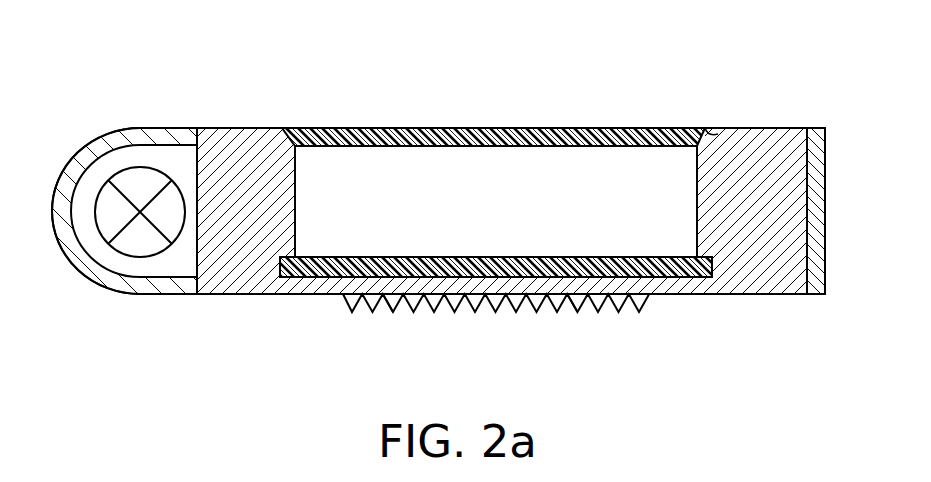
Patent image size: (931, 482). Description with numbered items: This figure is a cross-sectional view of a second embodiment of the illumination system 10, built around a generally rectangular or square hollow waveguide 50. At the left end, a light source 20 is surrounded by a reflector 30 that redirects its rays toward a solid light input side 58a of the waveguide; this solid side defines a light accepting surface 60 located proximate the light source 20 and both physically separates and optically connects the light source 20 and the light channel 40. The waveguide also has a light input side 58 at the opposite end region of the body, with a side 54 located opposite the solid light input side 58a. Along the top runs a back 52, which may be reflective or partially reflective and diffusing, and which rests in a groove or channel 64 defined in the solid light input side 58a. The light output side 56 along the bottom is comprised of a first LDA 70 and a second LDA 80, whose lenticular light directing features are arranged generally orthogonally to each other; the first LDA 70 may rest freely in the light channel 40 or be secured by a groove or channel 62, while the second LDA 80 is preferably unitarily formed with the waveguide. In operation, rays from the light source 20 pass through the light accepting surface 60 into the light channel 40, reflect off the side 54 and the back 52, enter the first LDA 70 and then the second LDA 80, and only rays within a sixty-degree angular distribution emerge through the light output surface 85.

The illumination system 10 is at (165, 52).
The light source 20 is at (131, 242).
The reflector 30 is at (56, 240).
The light channel 40 is at (490, 209).
The hollow waveguide 50 is at (818, 96).
The back 52 is at (543, 128).
The side 54 is at (825, 203).
The light output side 56 is at (478, 300).
The light input side 58 is at (752, 272).
The solid light input side 58a is at (263, 170).
The light accepting surface 60 is at (197, 256).
The groove or channel 62 is at (283, 278).
The groove or channel 64 is at (705, 133).
The first LDA 70 is at (351, 265).
The second LDA 80 is at (386, 300).
The light output surface 85 is at (569, 304).